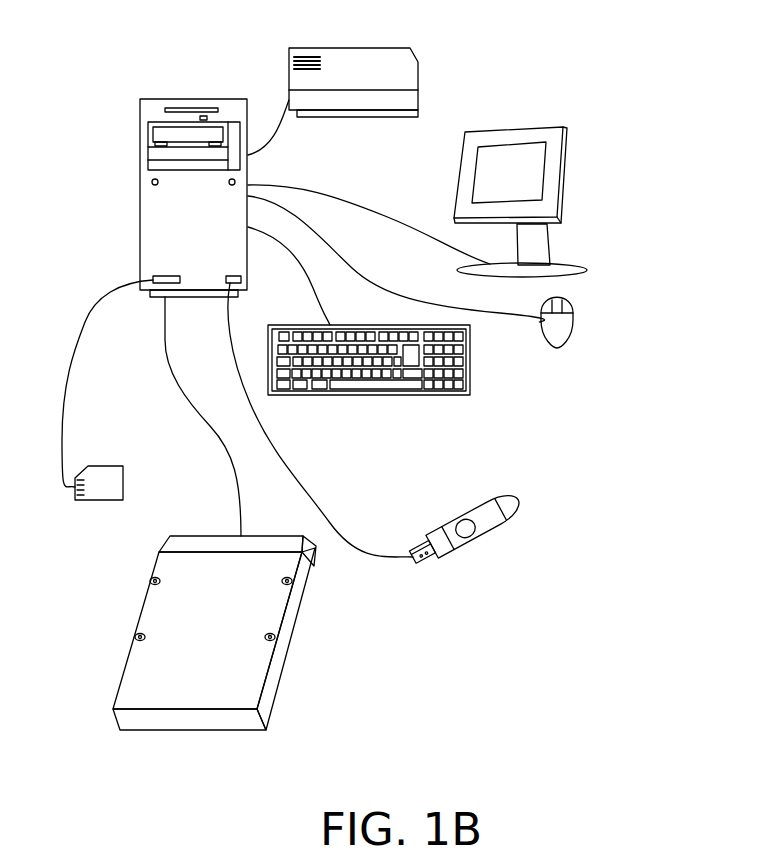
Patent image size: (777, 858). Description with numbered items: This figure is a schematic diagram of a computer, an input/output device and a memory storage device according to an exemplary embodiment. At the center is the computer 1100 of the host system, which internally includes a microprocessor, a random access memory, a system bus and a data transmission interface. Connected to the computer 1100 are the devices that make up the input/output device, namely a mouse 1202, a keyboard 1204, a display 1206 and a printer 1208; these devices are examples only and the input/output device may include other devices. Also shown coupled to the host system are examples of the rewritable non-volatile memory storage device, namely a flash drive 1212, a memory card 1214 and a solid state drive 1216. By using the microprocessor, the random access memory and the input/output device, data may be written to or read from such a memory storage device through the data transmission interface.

The computer 1100 is at (195, 99).
The printer 1208 is at (349, 48).
The display 1206 is at (522, 127).
The mouse 1202 is at (575, 327).
The keyboard 1204 is at (472, 371).
The memory card 1214 is at (127, 473).
The solid state drive 1216 is at (263, 527).
The flash drive 1212 is at (463, 517).